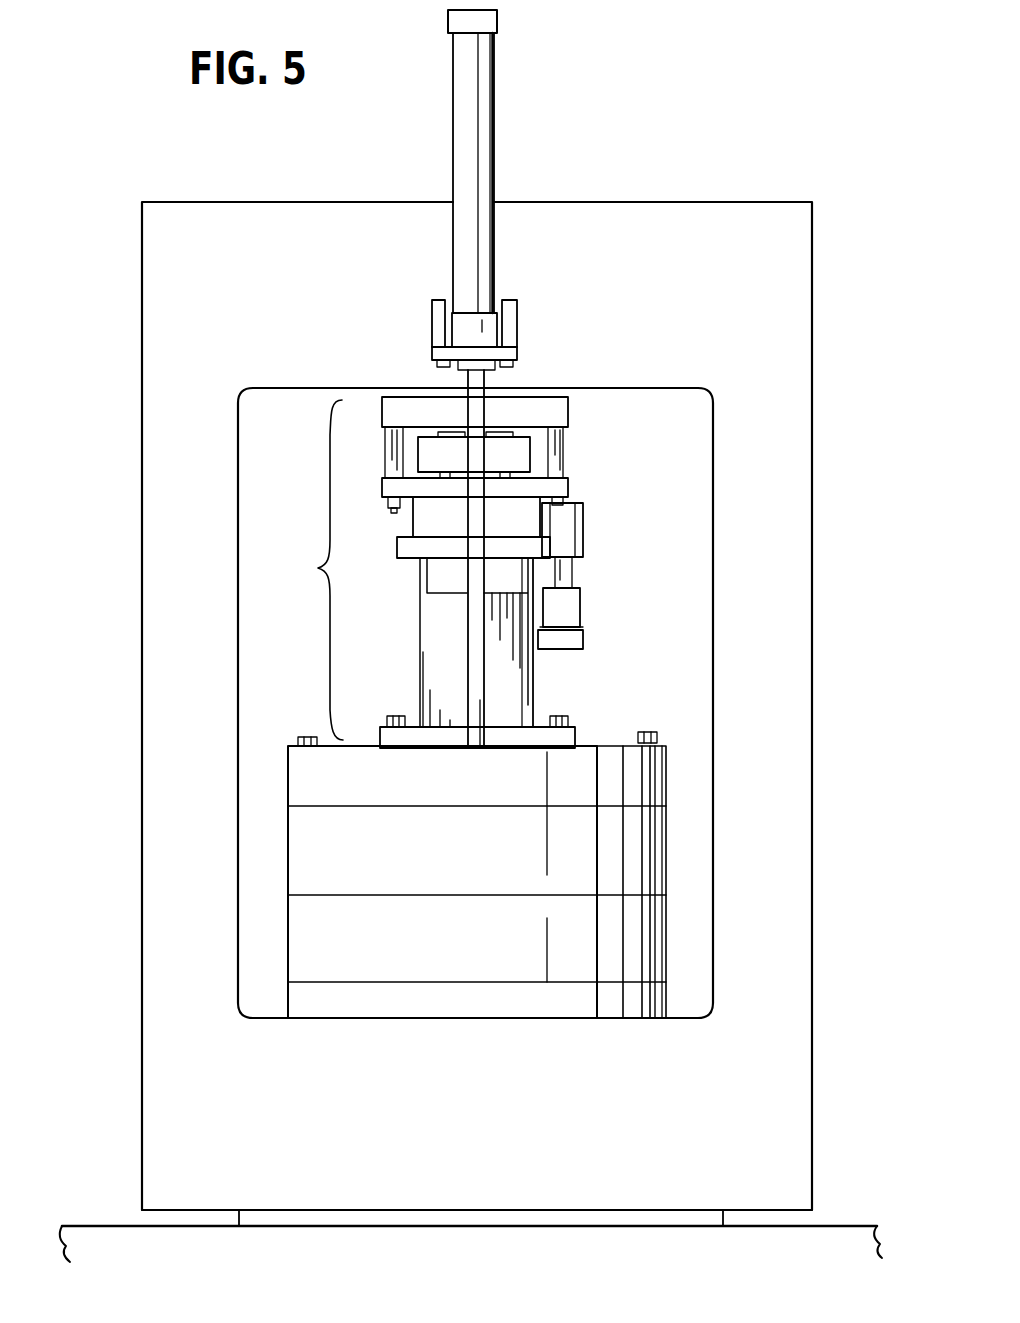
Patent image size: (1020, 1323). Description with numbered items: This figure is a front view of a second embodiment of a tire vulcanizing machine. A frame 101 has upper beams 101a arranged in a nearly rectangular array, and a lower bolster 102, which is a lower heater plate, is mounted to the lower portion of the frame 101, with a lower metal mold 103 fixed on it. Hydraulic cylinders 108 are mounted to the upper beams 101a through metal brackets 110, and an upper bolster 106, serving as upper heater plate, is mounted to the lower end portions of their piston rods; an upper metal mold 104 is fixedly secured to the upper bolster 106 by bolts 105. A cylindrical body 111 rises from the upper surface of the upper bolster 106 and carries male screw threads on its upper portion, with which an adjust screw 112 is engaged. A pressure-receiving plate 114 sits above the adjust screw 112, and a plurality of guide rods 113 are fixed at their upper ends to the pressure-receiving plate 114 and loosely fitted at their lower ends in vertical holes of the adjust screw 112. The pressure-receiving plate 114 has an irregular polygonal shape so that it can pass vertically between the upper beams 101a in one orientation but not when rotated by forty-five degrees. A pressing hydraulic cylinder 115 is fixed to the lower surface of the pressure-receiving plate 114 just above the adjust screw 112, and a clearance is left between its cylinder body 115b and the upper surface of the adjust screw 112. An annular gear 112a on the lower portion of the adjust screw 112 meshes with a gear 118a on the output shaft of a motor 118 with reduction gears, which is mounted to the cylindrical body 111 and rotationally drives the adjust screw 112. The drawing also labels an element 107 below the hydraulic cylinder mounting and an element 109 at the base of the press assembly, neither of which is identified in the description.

The frame 101 is at (793, 760).
The upper beams 101a is at (505, 298).
The lower bolster 102 is at (668, 997).
The lower metal mold 103 is at (652, 953).
The upper metal mold 104 is at (652, 862).
The bolts 105 is at (652, 738).
The upper bolster 106 is at (652, 783).
The coupling 107 is at (513, 370).
The hydraulic cylinders 108 is at (483, 125).
The base plate 109 is at (560, 712).
The metal brackets 110 is at (307, 570).
The cylindrical body 111 is at (534, 672).
The adjust screw 112 is at (518, 513).
The annular gear 112a is at (412, 551).
The guide rods 113 is at (563, 466).
The pressure-receiving plate 114 is at (560, 404).
The pressing hydraulic cylinder 115 is at (422, 426).
The cylinder body 115b is at (522, 453).
The motor 118 is at (573, 613).
The gear 118a is at (567, 538).